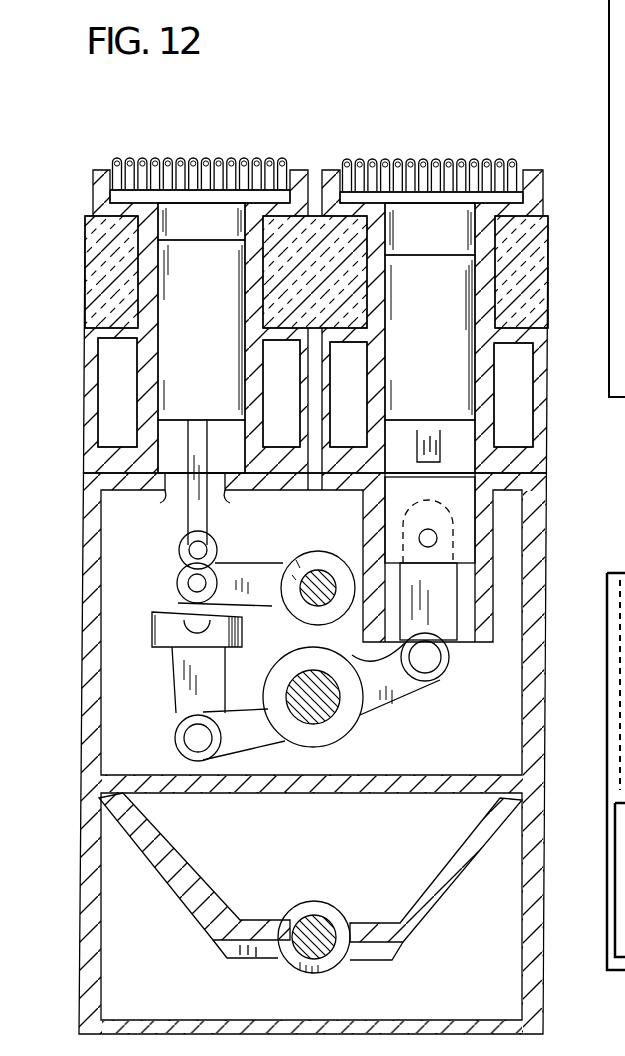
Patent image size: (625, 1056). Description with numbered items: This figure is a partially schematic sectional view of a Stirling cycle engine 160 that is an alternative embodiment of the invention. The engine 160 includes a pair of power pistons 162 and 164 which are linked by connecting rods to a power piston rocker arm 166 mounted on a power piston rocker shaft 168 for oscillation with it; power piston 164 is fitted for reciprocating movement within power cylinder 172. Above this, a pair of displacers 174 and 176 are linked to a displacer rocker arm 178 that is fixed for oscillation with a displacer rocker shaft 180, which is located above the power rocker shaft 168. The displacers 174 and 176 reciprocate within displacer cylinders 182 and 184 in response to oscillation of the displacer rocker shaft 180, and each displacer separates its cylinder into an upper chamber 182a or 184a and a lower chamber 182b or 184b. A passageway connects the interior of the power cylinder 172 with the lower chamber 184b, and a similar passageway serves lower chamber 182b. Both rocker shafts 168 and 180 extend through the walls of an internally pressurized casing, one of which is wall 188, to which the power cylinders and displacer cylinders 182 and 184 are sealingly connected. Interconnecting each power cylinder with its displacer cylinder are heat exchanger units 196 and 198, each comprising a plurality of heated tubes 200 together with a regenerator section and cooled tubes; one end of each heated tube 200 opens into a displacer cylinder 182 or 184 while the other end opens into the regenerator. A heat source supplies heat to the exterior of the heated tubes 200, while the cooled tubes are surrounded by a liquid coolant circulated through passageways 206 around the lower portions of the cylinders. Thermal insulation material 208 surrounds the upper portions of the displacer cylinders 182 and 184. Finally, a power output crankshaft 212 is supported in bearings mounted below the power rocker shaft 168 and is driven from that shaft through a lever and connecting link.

The Stirling cycle engine 160 is at (328, 150).
The power piston 162 is at (153, 648).
The power piston 164 is at (392, 501).
The power piston rocker arm 166 is at (413, 685).
The power piston rocker shaft 168 is at (332, 740).
The power cylinder 172 is at (470, 607).
The displacer 174 is at (184, 349).
The displacer 176 is at (416, 356).
The displacer rocker arm 178 is at (243, 560).
The displacer rocker shaft 180 is at (323, 577).
The displacer cylinder 182 is at (172, 475).
The upper chamber 182a is at (222, 230).
The lower chamber 182b is at (160, 455).
The displacer cylinder 184 is at (455, 468).
The upper chamber 184a is at (454, 230).
The lower chamber 184b is at (473, 460).
The casing wall 188 is at (460, 726).
The heat exchanger unit 196 is at (114, 166).
The heat exchanger unit 198 is at (523, 167).
The heated tubes 200 is at (194, 155).
The coolant passageways 206 is at (100, 367).
The thermal insulation material 208 is at (85, 262).
The power output crankshaft 212 is at (295, 916).